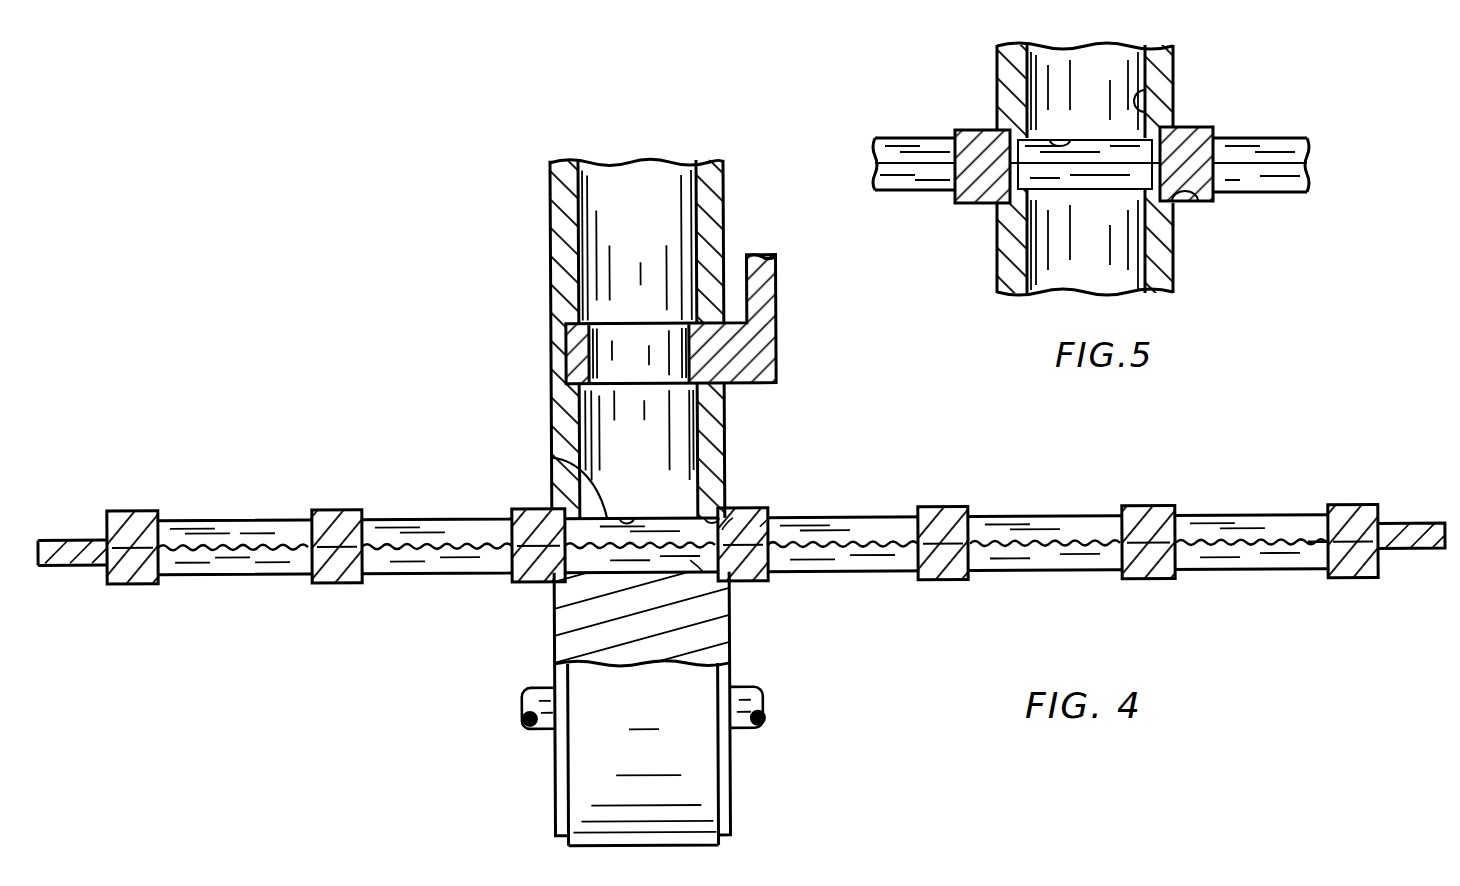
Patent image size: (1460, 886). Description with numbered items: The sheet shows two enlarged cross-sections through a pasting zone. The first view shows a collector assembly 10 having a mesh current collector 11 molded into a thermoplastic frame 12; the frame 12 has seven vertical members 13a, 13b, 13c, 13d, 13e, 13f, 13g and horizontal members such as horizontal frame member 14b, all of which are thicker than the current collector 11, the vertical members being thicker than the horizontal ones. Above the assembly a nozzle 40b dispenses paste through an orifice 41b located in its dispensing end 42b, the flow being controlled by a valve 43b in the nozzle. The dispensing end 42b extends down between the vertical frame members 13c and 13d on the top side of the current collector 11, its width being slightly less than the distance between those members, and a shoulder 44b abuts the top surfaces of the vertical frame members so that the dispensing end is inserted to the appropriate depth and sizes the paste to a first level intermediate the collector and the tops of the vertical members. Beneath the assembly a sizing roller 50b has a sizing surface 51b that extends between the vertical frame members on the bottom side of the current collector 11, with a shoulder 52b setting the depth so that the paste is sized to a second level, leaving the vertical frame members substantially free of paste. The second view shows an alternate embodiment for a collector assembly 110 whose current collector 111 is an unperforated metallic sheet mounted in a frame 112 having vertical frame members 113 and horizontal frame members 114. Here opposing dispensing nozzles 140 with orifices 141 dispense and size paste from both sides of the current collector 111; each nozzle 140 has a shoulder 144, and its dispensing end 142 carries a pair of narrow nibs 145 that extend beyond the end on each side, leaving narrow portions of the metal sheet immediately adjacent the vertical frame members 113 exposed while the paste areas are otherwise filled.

In FIG. 4, the collector assembly 10 is at (1296, 480).
In FIG. 4, the mesh current collector 11 is at (1205, 545).
In FIG. 4, the thermoplastic frame 12 is at (1363, 506).
In FIG. 4, the vertical frame member 13a is at (135, 585).
In FIG. 4, the vertical frame member 13b is at (345, 585).
In FIG. 4, the vertical frame member 13c is at (543, 578).
In FIG. 4, the vertical frame member 13d is at (763, 582).
In FIG. 4, the vertical frame member 13e is at (963, 582).
In FIG. 4, the vertical frame member 13f is at (1160, 578).
In FIG. 4, the vertical frame member 13g is at (1358, 568).
In FIG. 4, the horizontal frame member 14b is at (228, 530).
In FIG. 4, the nozzle 40b is at (560, 253).
In FIG. 4, the orifice 41b is at (553, 458).
In FIG. 4, the dispensing end 42b is at (760, 527).
In FIG. 4, the valve 43b is at (768, 348).
In FIG. 4, the shoulder 44b is at (722, 530).
In FIG. 4, the sizing roller 50b is at (578, 797).
In FIG. 4, the sizing surface 51b is at (690, 560).
In FIG. 4, the shoulder 52b is at (552, 582).
In FIG. 5, the collector assembly 110 is at (1287, 118).
In FIG. 5, the current collector 111 is at (1300, 160).
In FIG. 5, the frame 112 is at (1282, 194).
In FIG. 5, the vertical frame member 113 is at (970, 133).
In FIG. 5, the horizontal frame member 114 is at (905, 140).
In FIG. 5, the opposing dispensing nozzle 140 is at (1165, 57).
In FIG. 5, the orifice 141 is at (1148, 97).
In FIG. 5, the dispensing end 142 is at (1060, 145).
In FIG. 5, the shoulder 144 is at (1200, 200).
In FIG. 5, the nib 145 is at (1175, 145).